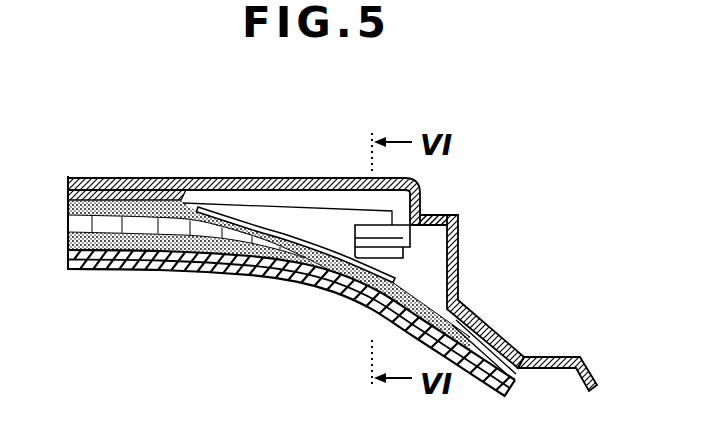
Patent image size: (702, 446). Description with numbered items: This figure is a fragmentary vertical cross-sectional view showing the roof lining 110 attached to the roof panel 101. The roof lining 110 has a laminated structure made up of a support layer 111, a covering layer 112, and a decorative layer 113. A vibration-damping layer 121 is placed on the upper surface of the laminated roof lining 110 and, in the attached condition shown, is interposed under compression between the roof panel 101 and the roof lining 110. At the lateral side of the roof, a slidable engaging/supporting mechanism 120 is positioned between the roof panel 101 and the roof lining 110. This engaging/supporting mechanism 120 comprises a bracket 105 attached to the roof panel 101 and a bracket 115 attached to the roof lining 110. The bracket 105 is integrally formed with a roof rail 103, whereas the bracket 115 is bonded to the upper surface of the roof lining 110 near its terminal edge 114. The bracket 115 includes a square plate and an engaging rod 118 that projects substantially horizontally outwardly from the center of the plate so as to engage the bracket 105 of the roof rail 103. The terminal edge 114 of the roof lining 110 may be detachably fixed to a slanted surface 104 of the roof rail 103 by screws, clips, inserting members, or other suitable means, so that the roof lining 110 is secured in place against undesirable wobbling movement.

The roof panel 101 is at (205, 178).
The vibration-damping layer 121 is at (100, 203).
The roof lining 110 is at (182, 196).
The covering layer 112 is at (231, 204).
The support layer 111 is at (105, 222).
The decorative layer 113 is at (266, 276).
The bracket 105 is at (345, 302).
The engaging rod 118 is at (393, 203).
The roof rail 103 is at (459, 266).
The slanted surface 104 is at (513, 348).
The terminal edge 114 is at (477, 328).
The bracket 115 is at (285, 192).
The slidable engaging/supporting mechanism 120 is at (337, 192).